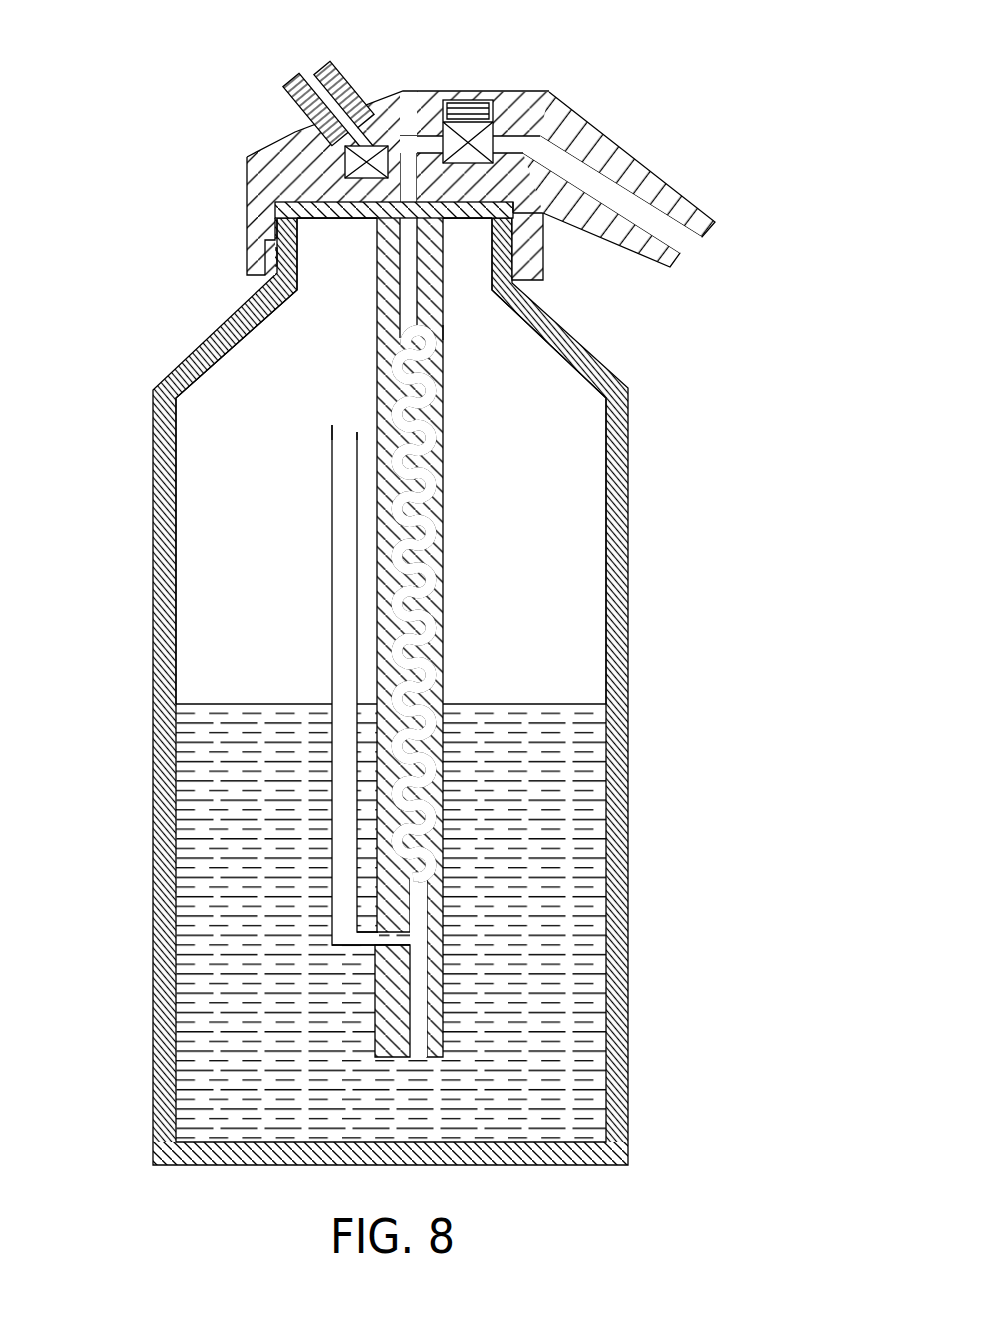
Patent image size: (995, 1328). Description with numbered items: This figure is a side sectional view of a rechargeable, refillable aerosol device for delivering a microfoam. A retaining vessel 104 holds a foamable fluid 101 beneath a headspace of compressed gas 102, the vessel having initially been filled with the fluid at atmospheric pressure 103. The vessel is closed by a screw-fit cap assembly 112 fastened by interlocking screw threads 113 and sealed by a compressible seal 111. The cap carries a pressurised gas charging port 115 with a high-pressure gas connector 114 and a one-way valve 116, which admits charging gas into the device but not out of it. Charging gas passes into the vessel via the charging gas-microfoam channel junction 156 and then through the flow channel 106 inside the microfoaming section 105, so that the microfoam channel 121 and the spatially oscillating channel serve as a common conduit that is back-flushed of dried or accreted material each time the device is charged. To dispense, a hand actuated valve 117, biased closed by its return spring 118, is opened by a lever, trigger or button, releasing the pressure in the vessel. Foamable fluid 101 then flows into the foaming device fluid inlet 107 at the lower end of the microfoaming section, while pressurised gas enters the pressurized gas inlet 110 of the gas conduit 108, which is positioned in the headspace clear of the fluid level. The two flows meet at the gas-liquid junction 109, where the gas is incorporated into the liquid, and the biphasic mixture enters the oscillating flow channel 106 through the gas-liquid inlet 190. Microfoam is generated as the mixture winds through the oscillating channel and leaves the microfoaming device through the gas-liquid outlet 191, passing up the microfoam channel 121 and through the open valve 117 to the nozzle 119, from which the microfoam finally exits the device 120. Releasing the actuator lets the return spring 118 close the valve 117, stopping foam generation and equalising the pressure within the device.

The foamable fluid 101 is at (597, 923).
The headspace of compressed gas 102 is at (585, 678).
The atmospheric pressure 103 is at (423, 691).
The retaining vessel 104 is at (623, 748).
The microfoaming section 105 is at (507, 632).
The flow channel 106 is at (437, 572).
The foaming device fluid inlet 107 is at (418, 1062).
The gas conduit 108 is at (330, 612).
The gas-liquid junction 109 is at (383, 938).
The pressurized gas inlet 110 is at (337, 420).
The seal 111 is at (460, 218).
The cap assembly 112 is at (247, 210).
The interlocking screw threads 113 is at (543, 247).
The high-pressure gas connector 114 is at (340, 93).
The pressurised gas charging port 115 is at (298, 62).
The one-way valve 116 is at (345, 150).
The hand actuated valve 117 is at (473, 140).
The return spring 118 is at (468, 100).
The nozzle 119 is at (627, 168).
The device exit 120 is at (690, 247).
The microfoam channel 121 is at (393, 318).
The charging gas-microfoam channel junction 156 is at (375, 220).
The gas-liquid inlet 190 is at (412, 878).
The gas-liquid outlet 191 is at (440, 332).